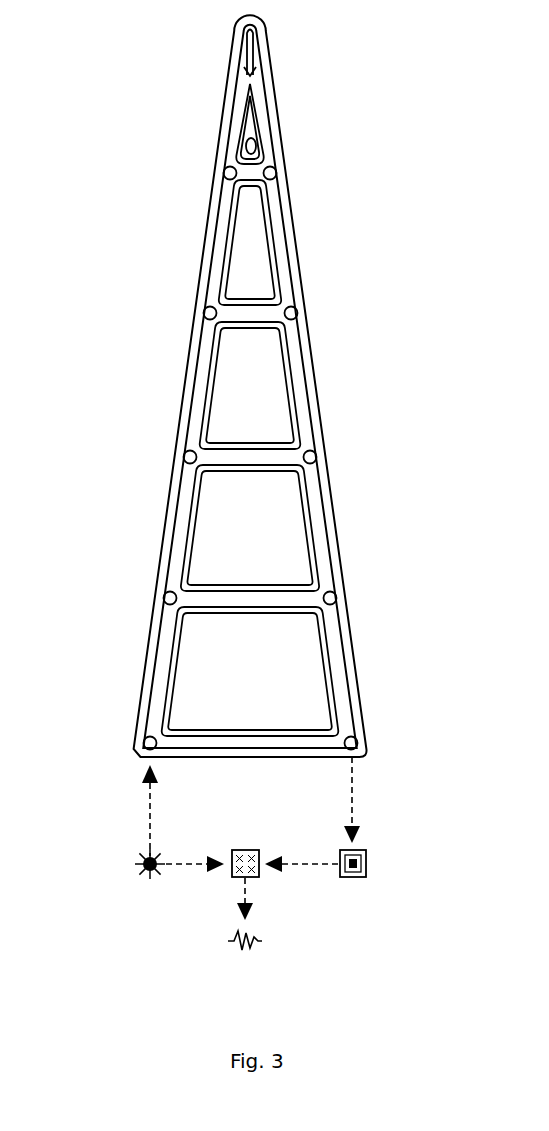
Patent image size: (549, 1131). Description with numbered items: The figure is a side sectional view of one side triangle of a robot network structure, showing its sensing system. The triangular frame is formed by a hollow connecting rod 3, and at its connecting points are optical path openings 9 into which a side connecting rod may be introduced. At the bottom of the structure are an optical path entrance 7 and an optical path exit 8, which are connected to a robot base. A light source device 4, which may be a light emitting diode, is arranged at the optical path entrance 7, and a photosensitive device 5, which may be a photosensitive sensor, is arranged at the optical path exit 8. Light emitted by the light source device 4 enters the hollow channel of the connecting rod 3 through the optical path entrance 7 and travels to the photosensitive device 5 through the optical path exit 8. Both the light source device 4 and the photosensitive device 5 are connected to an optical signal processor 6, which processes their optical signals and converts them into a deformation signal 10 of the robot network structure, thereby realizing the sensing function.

The connecting rod 3 is at (292, 223).
The optical path opening 9 is at (295, 313).
The optical path entrance 7 is at (138, 760).
The optical path exit 8 is at (363, 755).
The light source device 4 is at (136, 868).
The photosensitive device 5 is at (366, 866).
The optical signal processor 6 is at (259, 874).
The deformation signal 10 is at (254, 944).